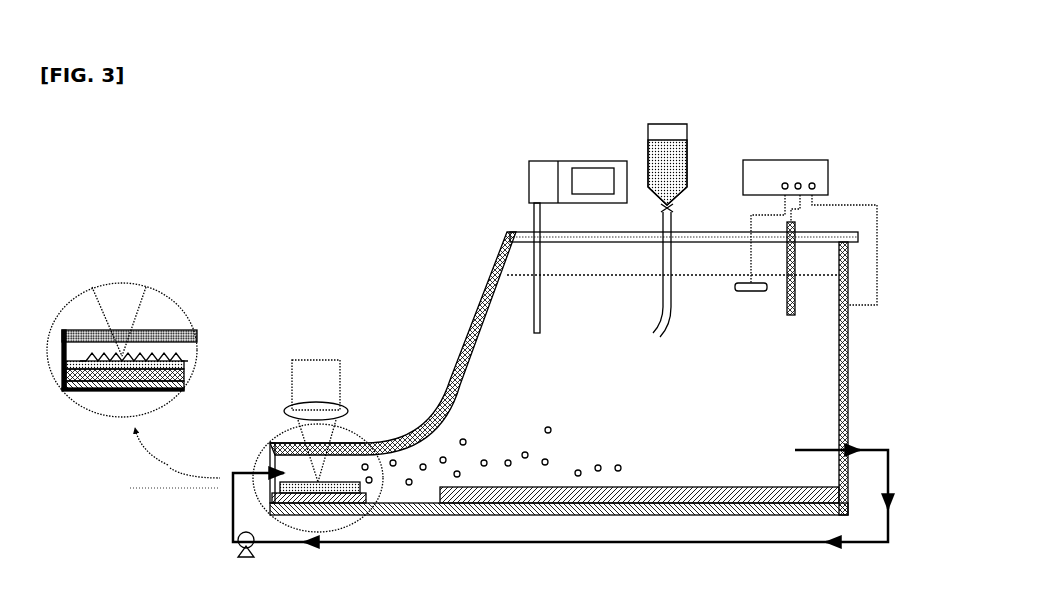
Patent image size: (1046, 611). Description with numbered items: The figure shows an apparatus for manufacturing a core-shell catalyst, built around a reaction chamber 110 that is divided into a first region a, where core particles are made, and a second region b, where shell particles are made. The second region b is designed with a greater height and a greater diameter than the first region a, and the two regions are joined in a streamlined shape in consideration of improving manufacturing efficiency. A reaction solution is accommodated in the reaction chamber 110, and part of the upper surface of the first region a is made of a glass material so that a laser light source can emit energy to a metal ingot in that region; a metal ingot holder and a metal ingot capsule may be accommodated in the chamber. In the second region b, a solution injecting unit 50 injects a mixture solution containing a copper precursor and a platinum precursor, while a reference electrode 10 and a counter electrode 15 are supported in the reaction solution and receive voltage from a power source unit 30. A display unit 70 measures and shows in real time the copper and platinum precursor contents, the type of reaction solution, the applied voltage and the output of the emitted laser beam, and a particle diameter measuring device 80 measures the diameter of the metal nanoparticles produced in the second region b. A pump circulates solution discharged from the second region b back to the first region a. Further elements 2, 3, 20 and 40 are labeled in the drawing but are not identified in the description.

The stage 2 is at (292, 505).
The cover plate 3 is at (278, 443).
The reference electrode 10 is at (312, 359).
The counter electrode 15 is at (748, 220).
The platform / connection wire 20 is at (625, 512).
The power source unit 30 is at (770, 160).
The tank 40 is at (853, 385).
The solution injecting unit 50 is at (688, 136).
The display unit 70 is at (595, 168).
The particle diameter measuring device 80 is at (530, 168).
The reaction chamber 110 is at (828, 520).
The first region a is at (380, 528).
The second region b is at (745, 530).